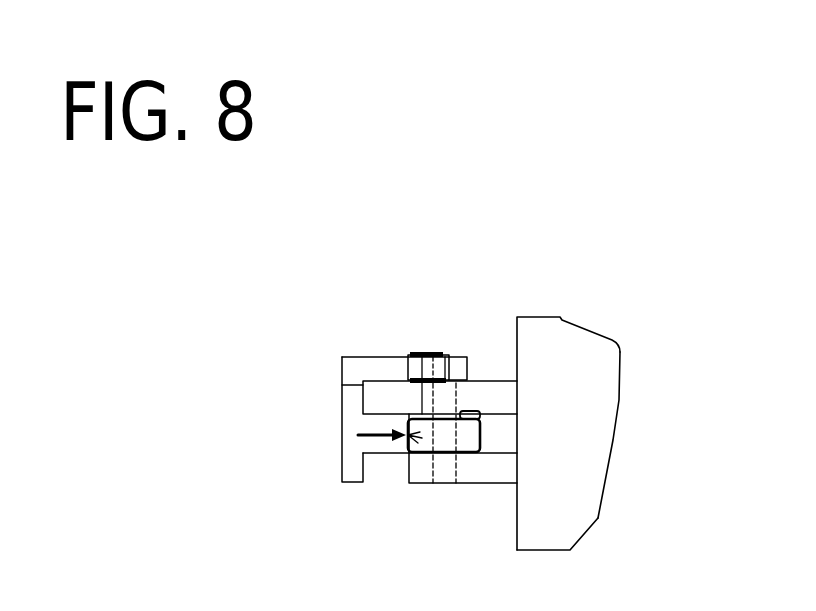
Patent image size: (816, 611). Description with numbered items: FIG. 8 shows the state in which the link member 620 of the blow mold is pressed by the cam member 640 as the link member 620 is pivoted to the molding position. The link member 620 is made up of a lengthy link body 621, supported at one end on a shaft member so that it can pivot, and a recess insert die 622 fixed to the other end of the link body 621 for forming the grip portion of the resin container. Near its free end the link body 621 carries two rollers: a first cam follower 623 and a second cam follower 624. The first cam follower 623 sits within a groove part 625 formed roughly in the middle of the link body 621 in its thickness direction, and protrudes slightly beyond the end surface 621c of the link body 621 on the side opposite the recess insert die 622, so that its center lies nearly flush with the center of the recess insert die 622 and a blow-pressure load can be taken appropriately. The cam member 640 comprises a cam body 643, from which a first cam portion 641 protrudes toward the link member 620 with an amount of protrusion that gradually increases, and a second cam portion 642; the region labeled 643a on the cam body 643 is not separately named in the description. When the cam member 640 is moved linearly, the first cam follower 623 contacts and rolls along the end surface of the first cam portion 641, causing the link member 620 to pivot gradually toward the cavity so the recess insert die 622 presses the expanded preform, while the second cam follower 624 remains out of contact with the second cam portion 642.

The link member 620 is at (613, 372).
The link body 621 is at (497, 395).
The end surface of the link body 621c is at (409, 468).
The recess insert die 622 is at (596, 437).
The first cam follower 623 is at (470, 437).
The second cam follower 624 is at (447, 353).
The groove part 625 is at (480, 413).
The cam member 640 is at (375, 407).
The first cam portion 641 is at (380, 448).
The second cam portion 642 is at (383, 362).
The cam body 643 is at (377, 477).
The screw tip 643a is at (430, 454).